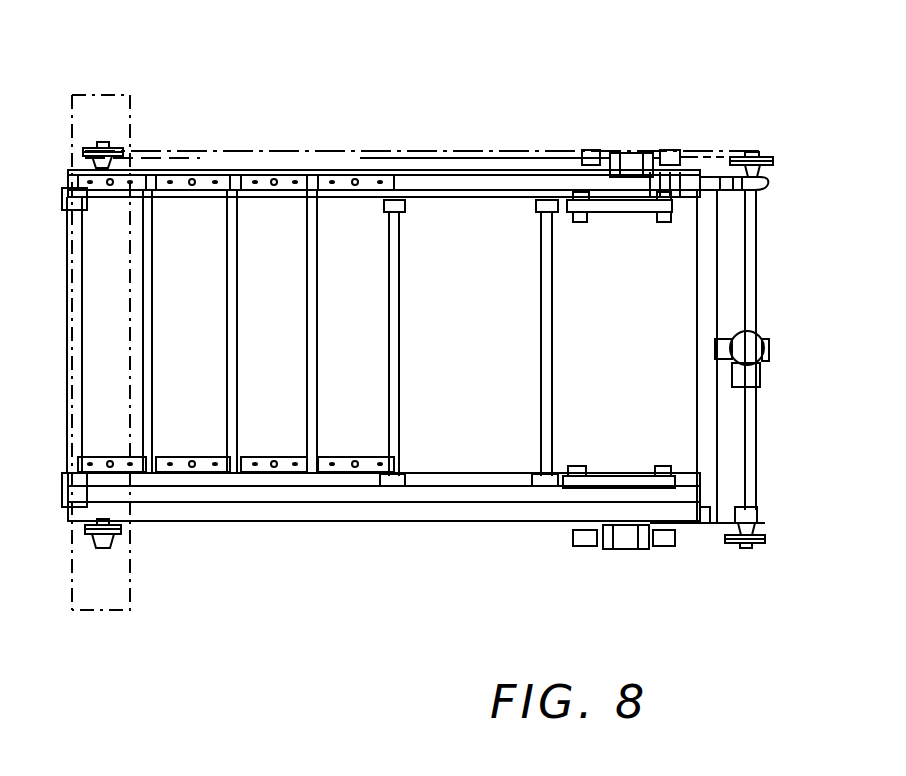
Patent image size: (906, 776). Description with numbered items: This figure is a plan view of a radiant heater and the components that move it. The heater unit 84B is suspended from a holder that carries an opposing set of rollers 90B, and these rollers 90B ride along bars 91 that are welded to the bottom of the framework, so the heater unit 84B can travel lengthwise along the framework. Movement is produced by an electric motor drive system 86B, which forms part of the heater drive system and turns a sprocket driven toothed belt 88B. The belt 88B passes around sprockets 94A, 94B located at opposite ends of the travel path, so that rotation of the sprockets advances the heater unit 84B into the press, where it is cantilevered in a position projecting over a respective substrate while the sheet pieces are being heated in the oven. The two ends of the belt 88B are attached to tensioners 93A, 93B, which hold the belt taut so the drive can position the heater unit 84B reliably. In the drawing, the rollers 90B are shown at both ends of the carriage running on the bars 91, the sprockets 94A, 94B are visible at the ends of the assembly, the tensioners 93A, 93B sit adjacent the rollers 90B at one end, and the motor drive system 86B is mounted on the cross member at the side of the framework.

The heater unit 84B is at (290, 352).
The electric motor drive system 86B is at (782, 340).
The sprocket driven toothed belt 88B is at (370, 152).
The rollers 90B is at (577, 200).
The bars 91 is at (437, 193).
The tensioner 93A is at (650, 548).
The tensioner 93B is at (670, 150).
The sprocket 94A is at (750, 150).
The sprocket 94B is at (115, 160).